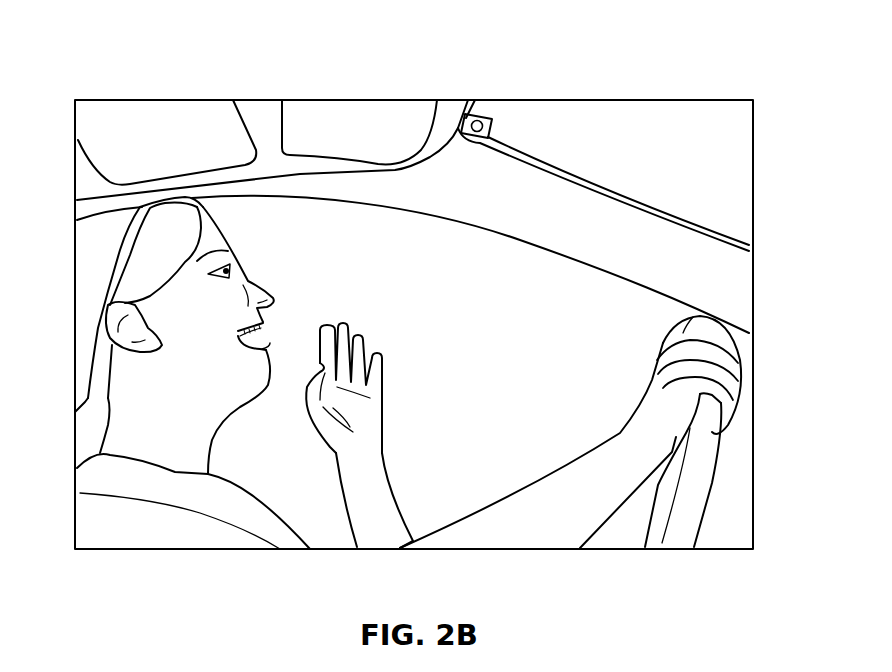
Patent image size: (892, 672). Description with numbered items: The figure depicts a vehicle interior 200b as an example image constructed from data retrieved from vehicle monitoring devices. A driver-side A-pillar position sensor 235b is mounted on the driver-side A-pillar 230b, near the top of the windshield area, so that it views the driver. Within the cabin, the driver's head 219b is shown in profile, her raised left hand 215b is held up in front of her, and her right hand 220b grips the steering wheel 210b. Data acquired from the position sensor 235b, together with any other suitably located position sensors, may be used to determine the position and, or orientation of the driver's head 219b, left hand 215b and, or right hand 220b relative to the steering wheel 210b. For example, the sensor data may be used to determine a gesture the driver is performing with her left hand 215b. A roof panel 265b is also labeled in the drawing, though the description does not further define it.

The vehicle interior 200b is at (100, 38).
The steering wheel 210b is at (694, 490).
The driver's left hand 215b is at (383, 410).
The driver's head 219b is at (173, 200).
The driver's right hand 220b is at (707, 376).
The driver-side A-pillar 230b is at (603, 233).
The driver-side A-pillar position sensor 235b is at (493, 128).
The roof window 265b is at (388, 122).